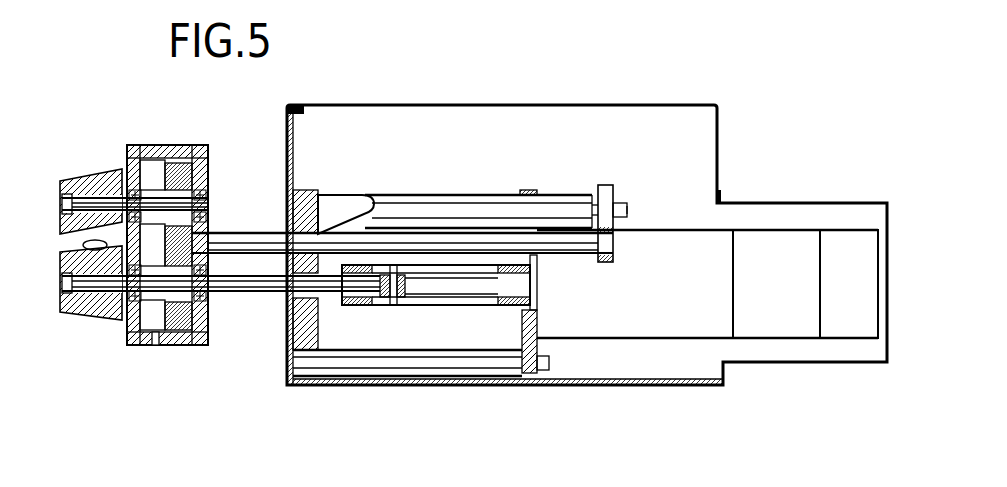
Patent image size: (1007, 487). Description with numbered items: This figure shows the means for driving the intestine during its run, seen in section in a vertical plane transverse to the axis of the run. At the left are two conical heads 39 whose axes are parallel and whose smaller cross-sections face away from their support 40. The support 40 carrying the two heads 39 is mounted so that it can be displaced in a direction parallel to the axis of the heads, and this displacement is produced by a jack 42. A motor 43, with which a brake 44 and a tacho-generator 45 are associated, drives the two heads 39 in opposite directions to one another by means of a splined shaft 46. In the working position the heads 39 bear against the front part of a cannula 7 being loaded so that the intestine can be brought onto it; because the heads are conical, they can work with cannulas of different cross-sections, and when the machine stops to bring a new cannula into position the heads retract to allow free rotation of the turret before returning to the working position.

The cannula 7 is at (72, 311).
The conical heads 39 is at (108, 176).
The support 40 is at (180, 146).
The jack 42 is at (471, 190).
The motor 43 is at (615, 303).
The brake 44 is at (765, 308).
The tacho-generator 45 is at (848, 312).
The splined shaft 46 is at (407, 345).